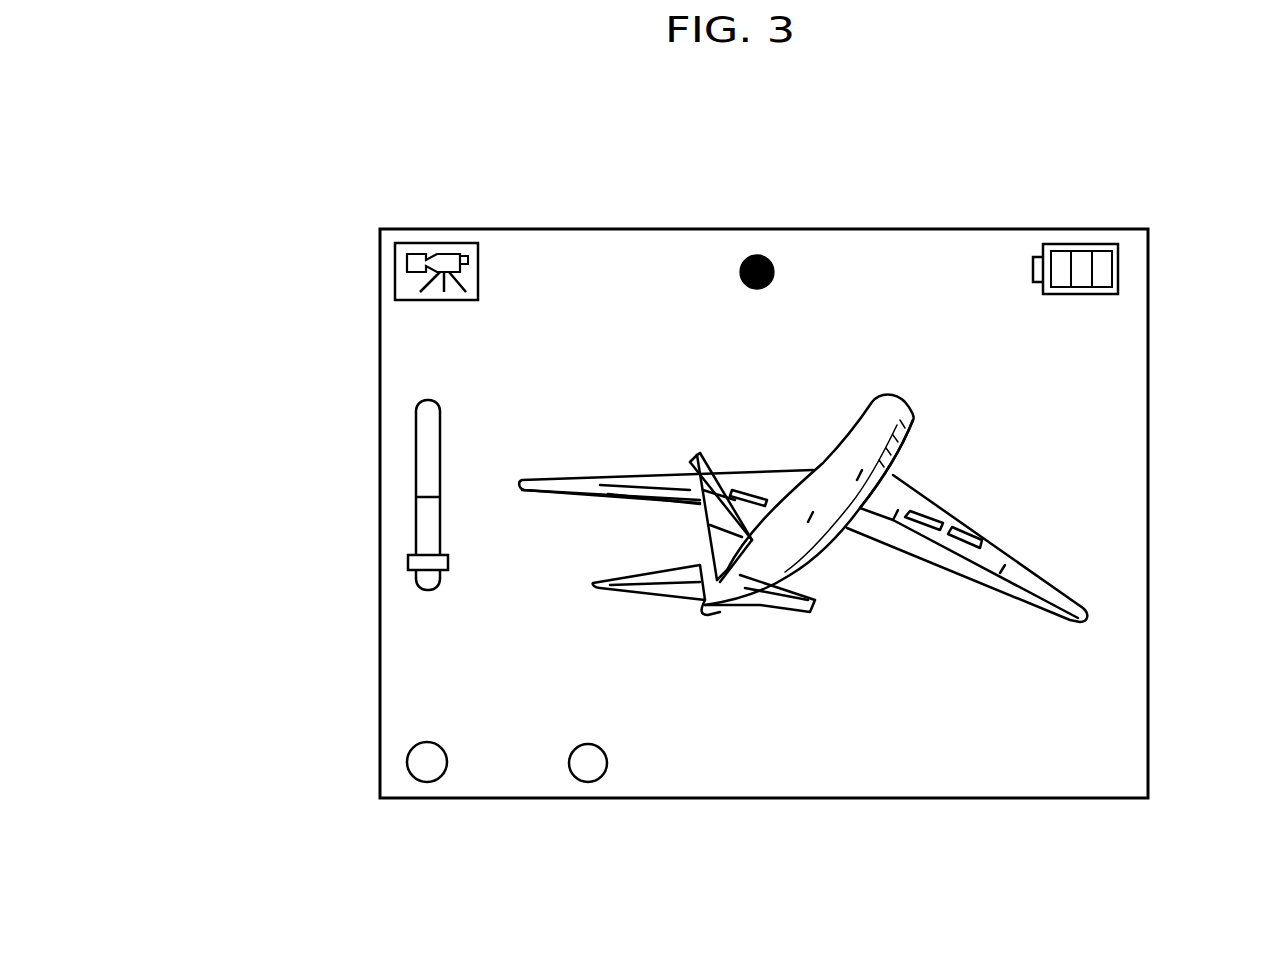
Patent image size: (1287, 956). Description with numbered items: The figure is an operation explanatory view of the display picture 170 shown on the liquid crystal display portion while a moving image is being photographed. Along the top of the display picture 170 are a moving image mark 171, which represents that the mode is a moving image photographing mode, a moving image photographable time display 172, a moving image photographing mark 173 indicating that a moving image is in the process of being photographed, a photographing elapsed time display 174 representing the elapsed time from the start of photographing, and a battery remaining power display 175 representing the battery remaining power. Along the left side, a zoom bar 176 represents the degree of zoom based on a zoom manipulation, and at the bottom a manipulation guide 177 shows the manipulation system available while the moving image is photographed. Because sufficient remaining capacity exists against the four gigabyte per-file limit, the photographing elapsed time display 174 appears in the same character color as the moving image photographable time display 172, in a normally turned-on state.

The display picture 170 is at (940, 778).
The moving image mark 171 is at (445, 245).
The moving image photographable time display 172 is at (545, 248).
The moving image photographing mark 173 is at (756, 255).
The photographing elapsed time display 174 is at (915, 250).
The battery remaining power display 175 is at (1080, 245).
The zoom bar 176 is at (415, 512).
The manipulation guide 177 is at (478, 789).